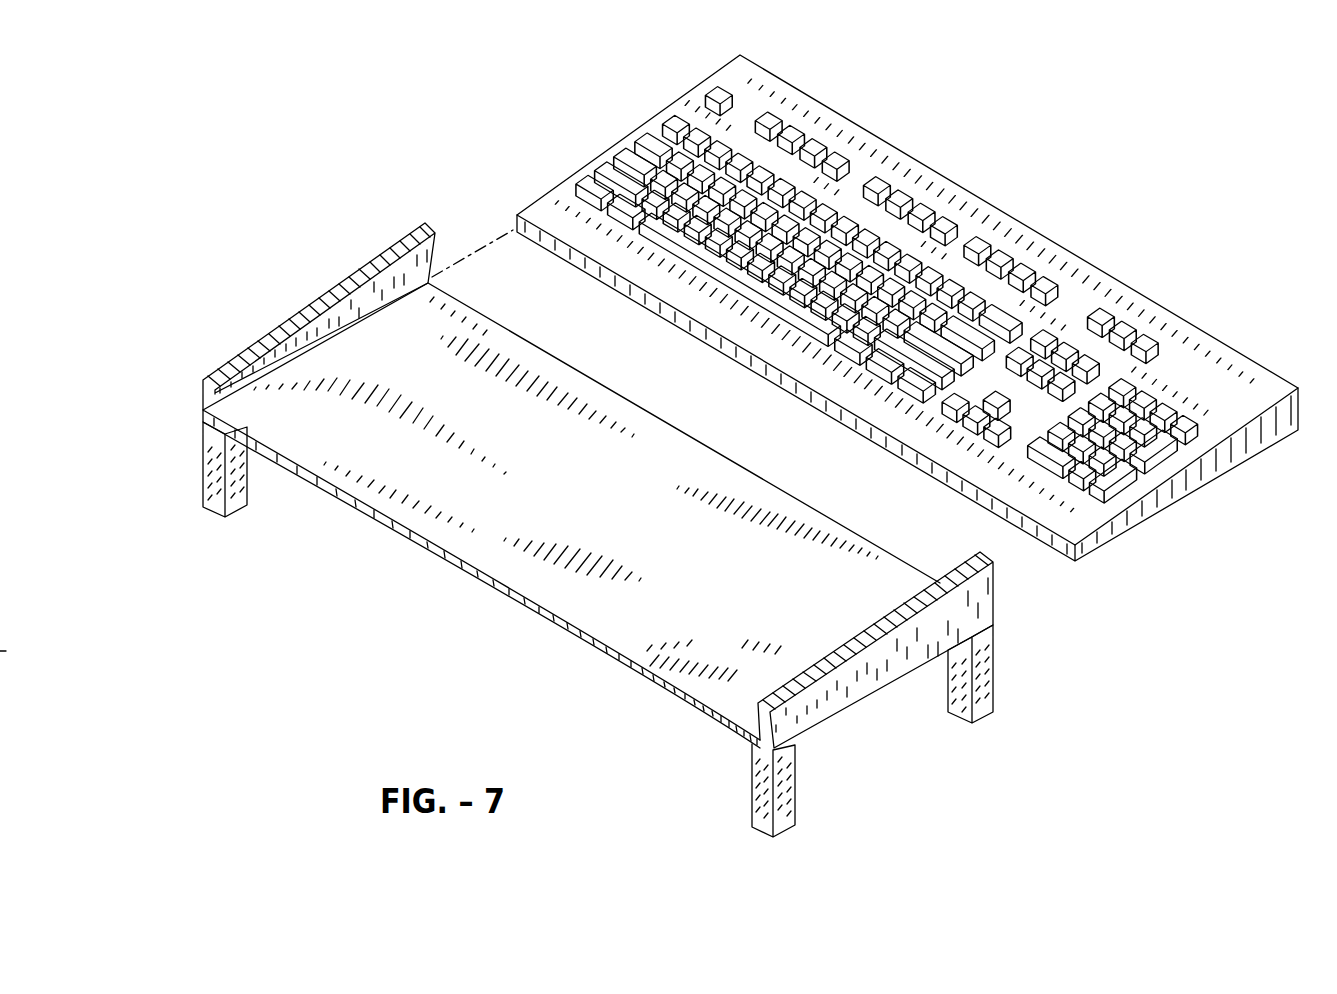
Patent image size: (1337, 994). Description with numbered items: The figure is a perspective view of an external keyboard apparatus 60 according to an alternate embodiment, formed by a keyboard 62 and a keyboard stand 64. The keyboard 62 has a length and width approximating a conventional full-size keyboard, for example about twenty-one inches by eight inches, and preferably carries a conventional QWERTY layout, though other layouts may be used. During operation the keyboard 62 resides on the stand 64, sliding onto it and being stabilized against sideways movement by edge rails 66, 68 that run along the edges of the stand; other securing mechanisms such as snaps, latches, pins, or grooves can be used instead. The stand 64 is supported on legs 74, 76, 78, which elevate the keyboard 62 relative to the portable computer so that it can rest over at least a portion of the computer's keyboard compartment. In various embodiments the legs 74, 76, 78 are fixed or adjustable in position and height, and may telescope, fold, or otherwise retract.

The external keyboard apparatus 60 is at (908, 313).
The keyboard 62 is at (1217, 530).
The keyboard stand 64 is at (613, 518).
The edge rail 66 is at (412, 238).
The edge rail 68 is at (993, 592).
The leg 74 is at (215, 470).
The leg 76 is at (788, 802).
The leg 78 is at (983, 695).